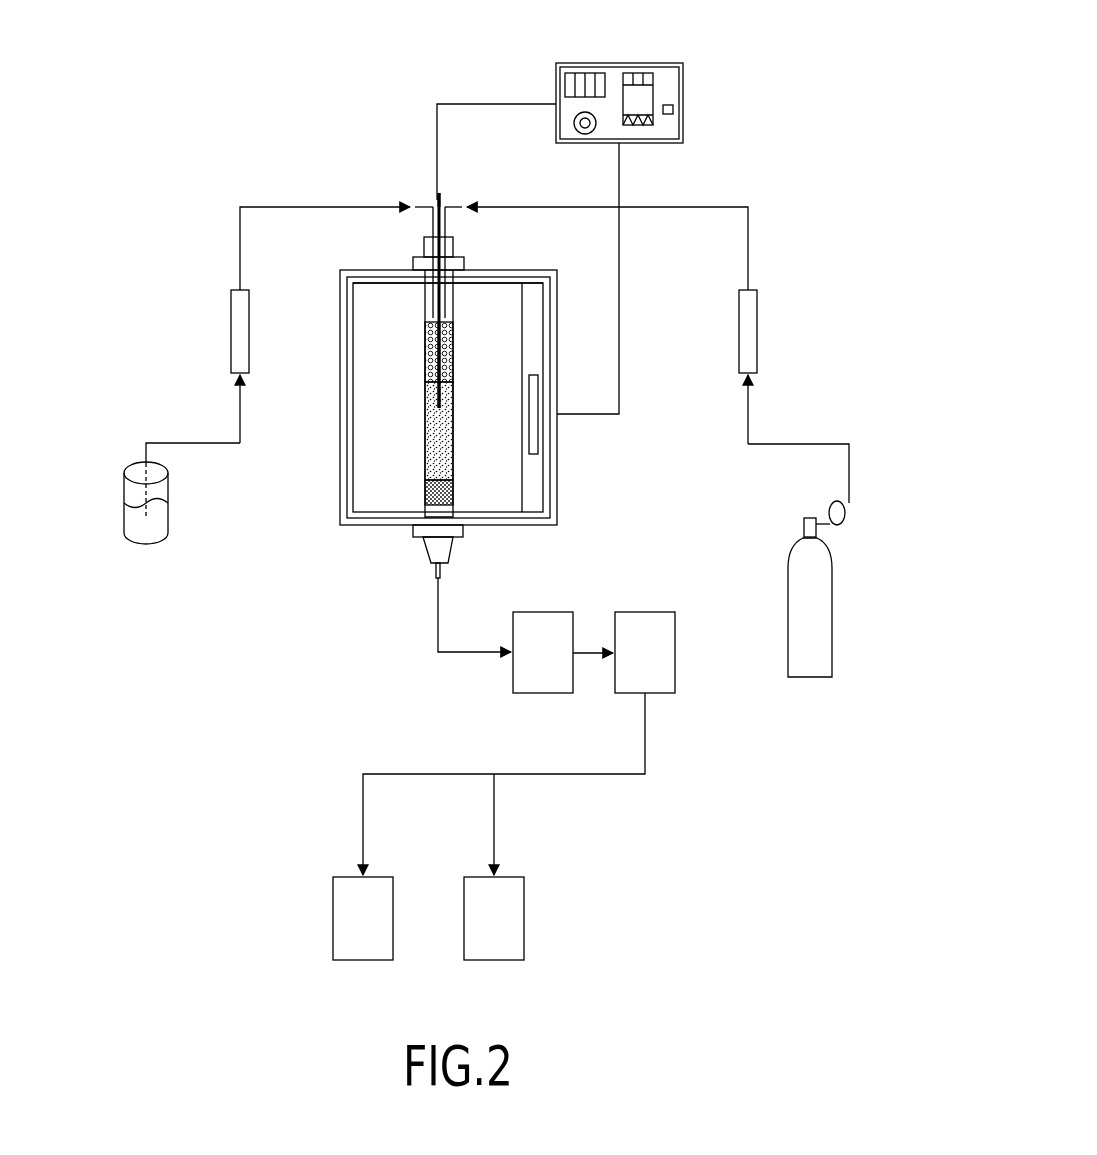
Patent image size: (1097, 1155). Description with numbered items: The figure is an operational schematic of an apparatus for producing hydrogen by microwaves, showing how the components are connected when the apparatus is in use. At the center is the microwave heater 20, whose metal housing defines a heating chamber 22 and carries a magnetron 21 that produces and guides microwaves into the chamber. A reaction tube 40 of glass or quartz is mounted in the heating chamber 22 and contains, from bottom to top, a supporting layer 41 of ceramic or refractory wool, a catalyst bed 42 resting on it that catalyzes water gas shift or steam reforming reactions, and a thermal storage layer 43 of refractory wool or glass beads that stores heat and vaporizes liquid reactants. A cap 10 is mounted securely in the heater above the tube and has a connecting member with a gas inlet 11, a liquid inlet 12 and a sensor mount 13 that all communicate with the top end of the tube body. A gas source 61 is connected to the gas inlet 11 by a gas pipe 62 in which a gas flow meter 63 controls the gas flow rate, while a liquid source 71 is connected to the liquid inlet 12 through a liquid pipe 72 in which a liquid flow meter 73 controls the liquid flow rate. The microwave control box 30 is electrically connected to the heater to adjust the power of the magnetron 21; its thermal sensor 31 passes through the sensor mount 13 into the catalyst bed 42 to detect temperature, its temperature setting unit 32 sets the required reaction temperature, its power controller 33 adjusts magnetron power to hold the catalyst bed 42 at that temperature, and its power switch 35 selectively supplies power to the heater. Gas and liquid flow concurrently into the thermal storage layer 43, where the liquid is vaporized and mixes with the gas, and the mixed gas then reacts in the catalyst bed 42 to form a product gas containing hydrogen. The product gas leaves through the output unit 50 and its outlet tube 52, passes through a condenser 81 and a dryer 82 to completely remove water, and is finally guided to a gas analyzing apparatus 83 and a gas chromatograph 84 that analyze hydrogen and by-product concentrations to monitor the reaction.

The cap 10 is at (410, 178).
The gas inlet 11 is at (455, 212).
The liquid inlet 12 is at (420, 212).
The sensor mount 13 is at (442, 200).
The microwave heater 20 is at (567, 512).
The magnetron 21 is at (538, 437).
The heating chamber 22 is at (507, 305).
The microwave control box 30 is at (578, 55).
The thermal sensor 31 is at (435, 315).
The temperature setting unit 32 is at (640, 77).
The power controller 33 is at (584, 128).
The power switch 35 is at (674, 108).
The reaction tube 40 is at (458, 412).
The supporting layer 41 is at (428, 497).
The catalyst bed 42 is at (427, 435).
The thermal storage layer 43 is at (427, 368).
The output unit 50 is at (400, 548).
The outlet tube 52 is at (436, 578).
The gas source 61 is at (824, 627).
The gas pipe 62 is at (690, 207).
The gas flow meter 63 is at (757, 330).
The liquid source 71 is at (168, 523).
The liquid pipe 72 is at (275, 207).
The liquid flow meter 73 is at (231, 335).
The condenser 81 is at (556, 664).
The dryer 82 is at (657, 664).
The gas analyzing apparatus 83 is at (507, 929).
The gas chromatograph 84 is at (375, 929).